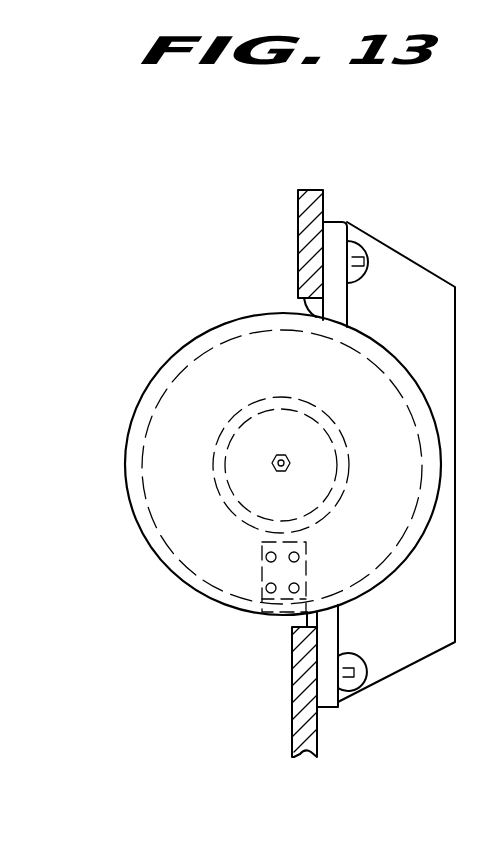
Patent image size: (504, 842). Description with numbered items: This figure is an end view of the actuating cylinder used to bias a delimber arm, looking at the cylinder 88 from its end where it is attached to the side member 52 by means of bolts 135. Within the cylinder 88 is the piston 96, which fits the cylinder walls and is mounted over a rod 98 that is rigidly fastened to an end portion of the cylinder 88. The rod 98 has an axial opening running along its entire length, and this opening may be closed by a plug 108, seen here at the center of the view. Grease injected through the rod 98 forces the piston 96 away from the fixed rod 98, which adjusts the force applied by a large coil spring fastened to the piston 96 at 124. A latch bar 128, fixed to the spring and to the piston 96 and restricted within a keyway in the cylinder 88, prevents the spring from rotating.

The side member 52 is at (293, 705).
The cylinder 88 is at (185, 345).
The piston 96 is at (230, 510).
The rod 98 is at (237, 472).
The plug 108 is at (284, 455).
The spring fastening point on piston 124 is at (296, 585).
The latch bar 128 is at (260, 577).
The bolts 135 is at (352, 253).